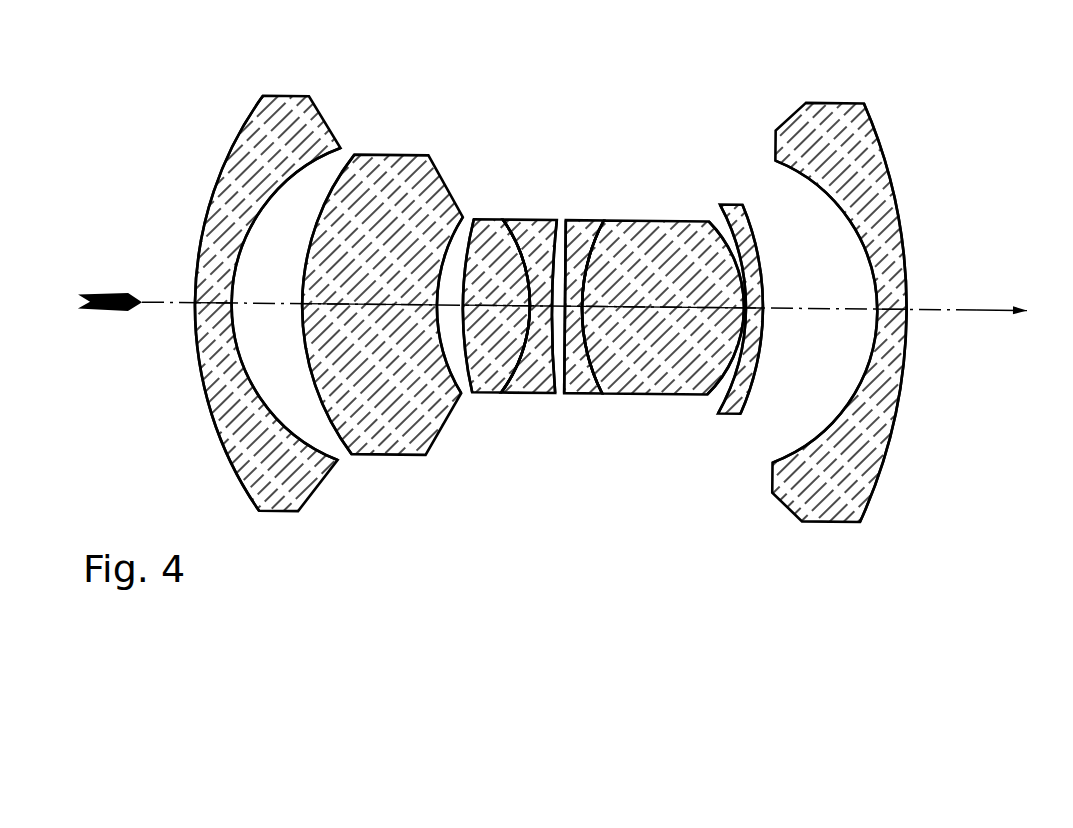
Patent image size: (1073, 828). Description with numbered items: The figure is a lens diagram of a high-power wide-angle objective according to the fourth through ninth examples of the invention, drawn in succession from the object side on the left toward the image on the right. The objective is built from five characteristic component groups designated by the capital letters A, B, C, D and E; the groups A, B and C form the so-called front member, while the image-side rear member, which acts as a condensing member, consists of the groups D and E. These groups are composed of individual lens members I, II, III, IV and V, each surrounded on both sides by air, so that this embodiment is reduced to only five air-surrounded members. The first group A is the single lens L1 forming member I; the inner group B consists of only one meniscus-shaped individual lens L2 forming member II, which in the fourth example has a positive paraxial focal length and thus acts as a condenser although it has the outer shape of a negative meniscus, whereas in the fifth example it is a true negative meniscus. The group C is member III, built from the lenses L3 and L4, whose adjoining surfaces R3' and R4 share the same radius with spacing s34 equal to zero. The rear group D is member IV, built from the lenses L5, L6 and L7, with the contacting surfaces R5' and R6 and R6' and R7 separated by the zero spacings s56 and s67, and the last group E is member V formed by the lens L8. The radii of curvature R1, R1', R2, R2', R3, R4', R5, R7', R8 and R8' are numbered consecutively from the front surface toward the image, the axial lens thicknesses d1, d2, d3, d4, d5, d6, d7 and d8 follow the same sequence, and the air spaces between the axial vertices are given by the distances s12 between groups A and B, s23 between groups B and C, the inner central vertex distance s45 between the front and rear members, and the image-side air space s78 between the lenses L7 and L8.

The first lens L1 is at (277, 500).
The second lens L2 is at (391, 446).
The third lens L3 is at (495, 404).
The fourth lens L4 is at (538, 405).
The fifth lens L5 is at (617, 405).
The sixth lens L6 is at (661, 405).
The seventh lens L7 is at (739, 398).
The eighth lens L8 is at (820, 504).
The first individual lens member I is at (275, 583).
The second individual lens member II is at (388, 580).
The third individual lens member III is at (540, 668).
The fourth individual lens member IV is at (695, 668).
The fifth individual lens member V is at (819, 587).
The component group A is at (269, 684).
The component group B is at (384, 684).
The component group C is at (538, 688).
The component group D is at (694, 689).
The component group E is at (811, 687).
The front surface radius of L1 R1 is at (224, 293).
The rear surface radius of L1 R1' is at (289, 264).
The front surface radius of L2 R2 is at (350, 275).
The rear surface radius of L2 R2' is at (452, 265).
The front surface radius of L3 R3 is at (485, 275).
The rear surface radius of L3 R3' is at (517, 262).
The front surface radius of L4 R4 is at (528, 283).
The rear surface radius of L4 R4' is at (568, 265).
The front surface radius of L5 R5 is at (588, 284).
The rear surface radius of L5 R5' is at (607, 265).
The front surface radius of L6 R6 is at (624, 286).
The rear surface radius of L6 R6' is at (713, 280).
The front surface radius of L7 R7 is at (732, 273).
The rear surface radius of L7 R7' is at (764, 291).
The front surface radius of L8 R8 is at (826, 312).
The rear surface radius of L8 R8' is at (914, 312).
The axial thickness of L1 d1 is at (213, 301).
The axial thickness of L2 d2 is at (369, 305).
The axial thickness of L3 d3 is at (496, 306).
The axial thickness of L4 d4 is at (540, 269).
The axial thickness of L5 d5 is at (576, 271).
The axial thickness of L6 d6 is at (663, 307).
The axial thickness of L7 d7 is at (761, 305).
The axial thickness of L8 d8 is at (892, 311).
The air space between L1 and L2 s12 is at (272, 307).
The air space between L2 and L3 s23 is at (447, 311).
The vertex spacing between L3 and L4 s34 is at (524, 397).
The inner central vertex distance s45 is at (558, 397).
The vertex spacing between L5 and L6 s56 is at (588, 322).
The vertex spacing between L6 and L7 s67 is at (765, 316).
The image-side air space s78 is at (812, 308).